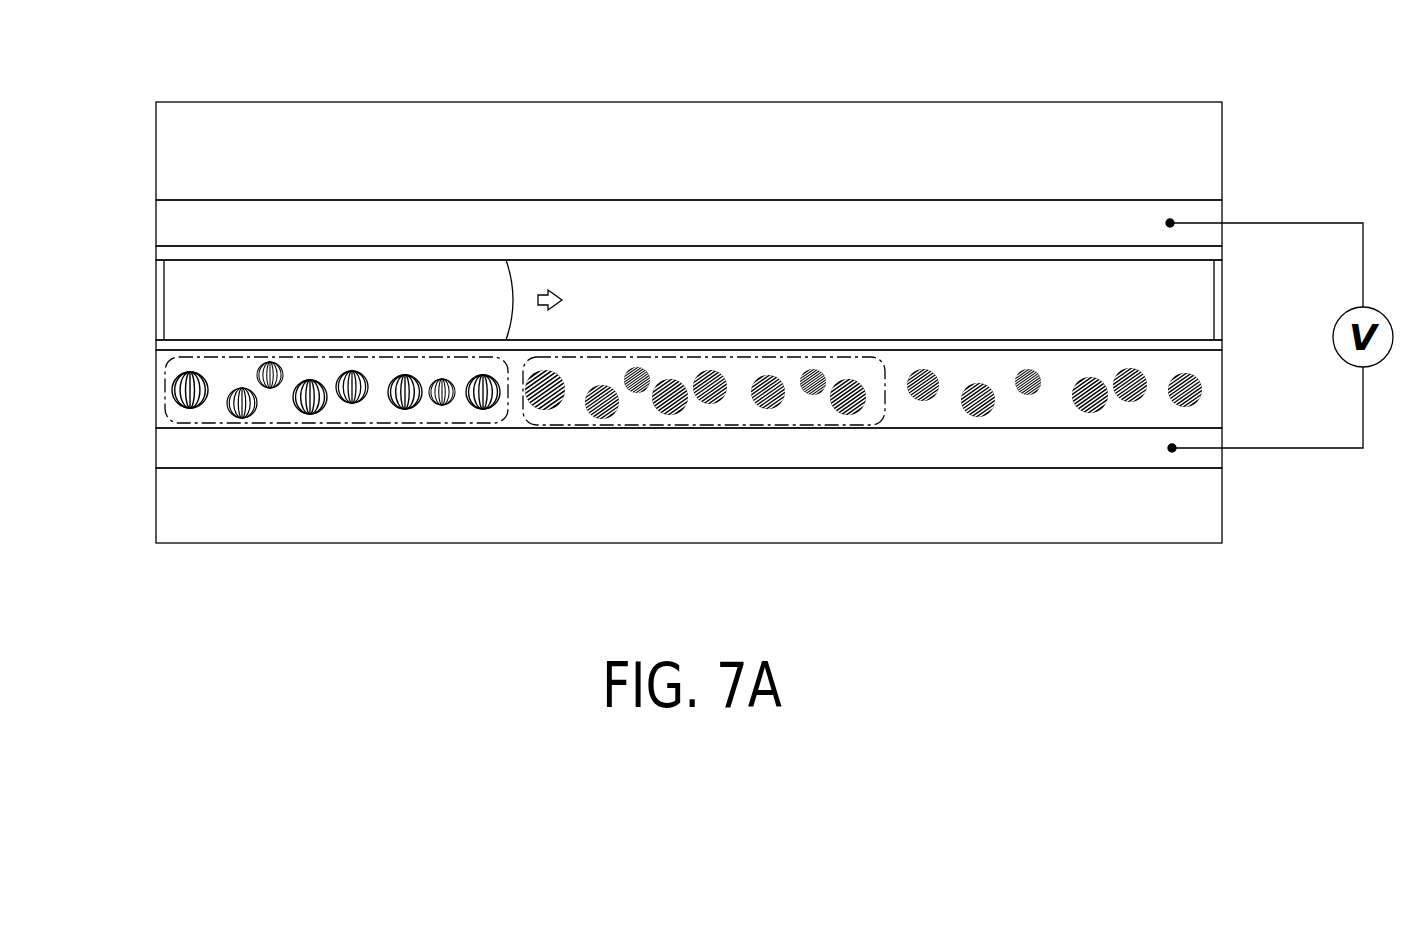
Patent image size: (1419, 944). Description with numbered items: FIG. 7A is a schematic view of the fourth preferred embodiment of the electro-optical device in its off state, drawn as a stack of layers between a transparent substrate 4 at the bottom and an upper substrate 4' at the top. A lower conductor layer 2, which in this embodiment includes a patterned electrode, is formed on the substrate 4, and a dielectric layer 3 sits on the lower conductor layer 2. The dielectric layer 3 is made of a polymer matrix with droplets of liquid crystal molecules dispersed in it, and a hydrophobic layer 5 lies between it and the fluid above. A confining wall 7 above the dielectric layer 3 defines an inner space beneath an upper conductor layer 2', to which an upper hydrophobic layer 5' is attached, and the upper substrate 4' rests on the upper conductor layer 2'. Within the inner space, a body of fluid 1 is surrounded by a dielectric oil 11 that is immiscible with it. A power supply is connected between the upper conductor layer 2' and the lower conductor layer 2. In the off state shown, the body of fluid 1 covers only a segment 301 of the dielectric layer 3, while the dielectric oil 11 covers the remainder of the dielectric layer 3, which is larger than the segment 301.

The body of fluid 1 is at (193, 317).
The lower conductor layer 2 is at (636, 451).
The upper conductor layer 2' is at (733, 215).
The dielectric layer 3 is at (165, 420).
The transparent substrate 4 is at (634, 505).
The upper substrate 4' is at (730, 151).
The hydrophobic layer 5 is at (731, 356).
The upper hydrophobic layer 5' is at (733, 256).
The confining wall 7 is at (158, 272).
The dielectric oil 11 is at (1185, 300).
The segment 301 is at (353, 410).